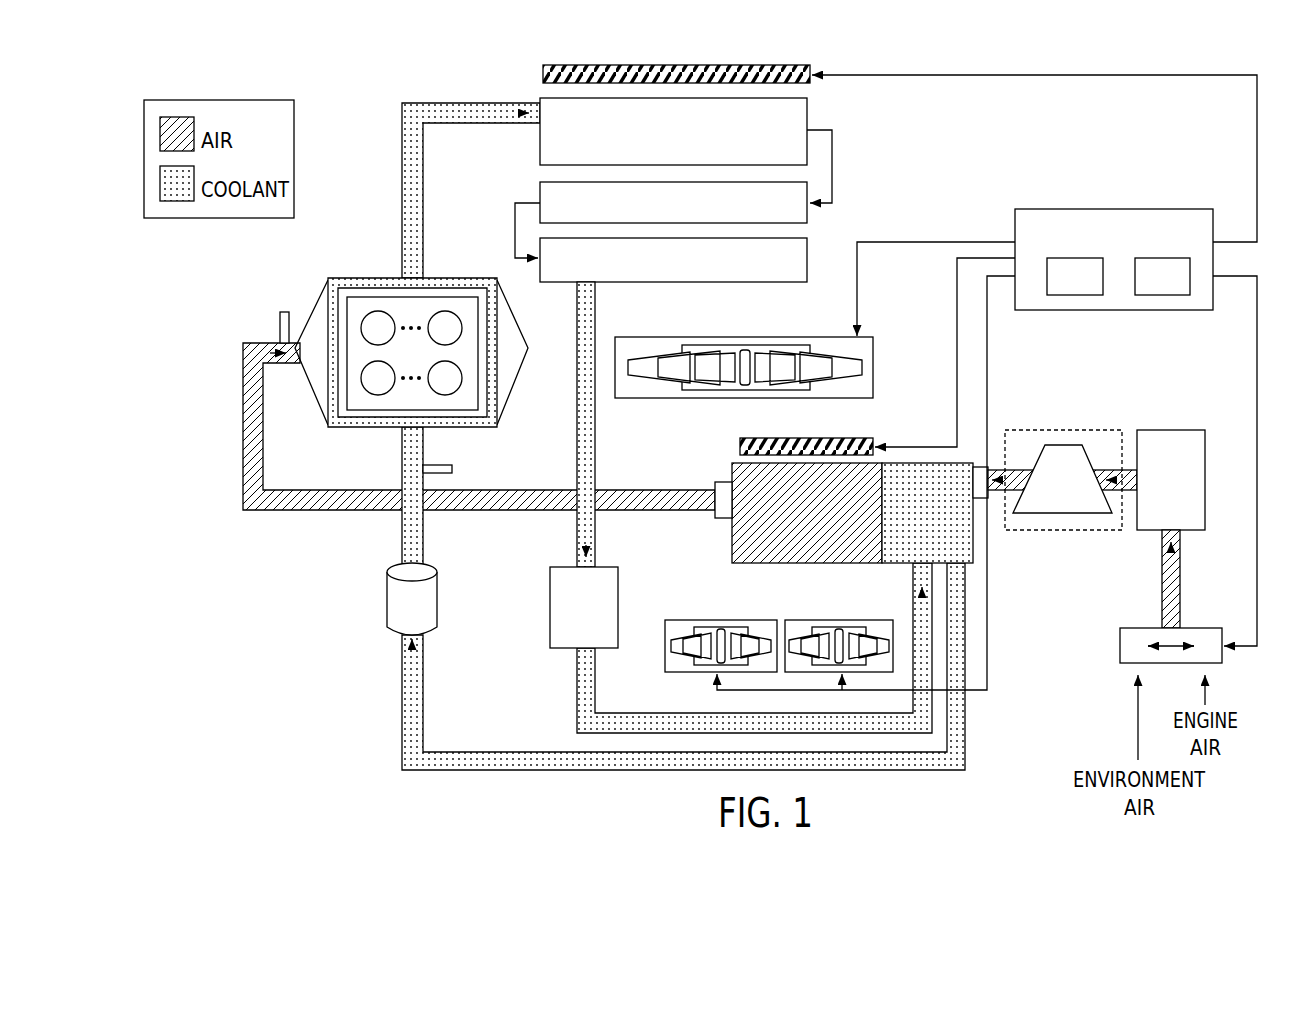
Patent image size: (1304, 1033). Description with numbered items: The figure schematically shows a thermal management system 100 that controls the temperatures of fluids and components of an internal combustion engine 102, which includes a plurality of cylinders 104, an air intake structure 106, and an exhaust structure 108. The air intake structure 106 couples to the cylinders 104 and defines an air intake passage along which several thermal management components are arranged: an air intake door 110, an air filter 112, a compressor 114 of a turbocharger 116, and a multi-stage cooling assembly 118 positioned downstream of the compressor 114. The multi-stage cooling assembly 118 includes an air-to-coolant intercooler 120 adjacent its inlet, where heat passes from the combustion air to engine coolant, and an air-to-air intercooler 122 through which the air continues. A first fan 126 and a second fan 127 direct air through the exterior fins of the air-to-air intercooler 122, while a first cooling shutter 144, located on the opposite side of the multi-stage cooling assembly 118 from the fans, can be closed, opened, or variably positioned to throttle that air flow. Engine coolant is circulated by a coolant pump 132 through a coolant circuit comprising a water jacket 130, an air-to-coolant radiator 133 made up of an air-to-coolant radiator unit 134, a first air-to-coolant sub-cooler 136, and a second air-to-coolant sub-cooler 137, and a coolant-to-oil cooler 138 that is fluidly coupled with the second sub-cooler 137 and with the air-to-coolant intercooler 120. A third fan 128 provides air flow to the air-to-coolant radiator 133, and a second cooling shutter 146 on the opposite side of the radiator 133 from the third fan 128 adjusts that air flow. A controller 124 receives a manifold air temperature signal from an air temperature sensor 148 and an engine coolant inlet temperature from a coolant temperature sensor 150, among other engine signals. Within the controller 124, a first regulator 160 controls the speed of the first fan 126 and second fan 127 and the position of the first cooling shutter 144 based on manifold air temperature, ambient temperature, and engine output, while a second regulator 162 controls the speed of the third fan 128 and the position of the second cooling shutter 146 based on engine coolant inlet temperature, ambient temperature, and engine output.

The thermal management system 100 is at (984, 26).
The internal combustion engine 102 is at (428, 328).
The cylinders 104 is at (373, 362).
The air intake structure 106 is at (1044, 573).
The exhaust structure 108 is at (536, 392).
The air intake door 110 is at (1135, 627).
The air filter 112 is at (1171, 480).
The compressor 114 is at (1062, 479).
The turbocharger 116 is at (1073, 530).
The multi-stage cooling assembly 118 is at (821, 533).
The air-to-coolant intercooler 120 is at (927, 513).
The air-to-air intercooler 122 is at (807, 513).
The controller 124 is at (1114, 259).
The first fan 126 is at (745, 620).
The second fan 127 is at (858, 620).
The third fan 128 is at (867, 337).
The water jacket 130 is at (447, 428).
The coolant pump 132 is at (676, 666).
The air-to-coolant radiator 133 is at (698, 183).
The air-to-coolant radiator unit 134 is at (673, 131).
The first air-to-coolant sub-cooler 136 is at (673, 202).
The second air-to-coolant sub-cooler 137 is at (673, 260).
The coolant-to-oil cooler 138 is at (741, 507).
The first cooling shutter 144 is at (760, 437).
The second cooling shutter 146 is at (780, 65).
The air temperature sensor 148 is at (283, 311).
The coolant temperature sensor 150 is at (455, 469).
The first regulator 160 is at (1075, 276).
The second regulator 162 is at (1162, 276).